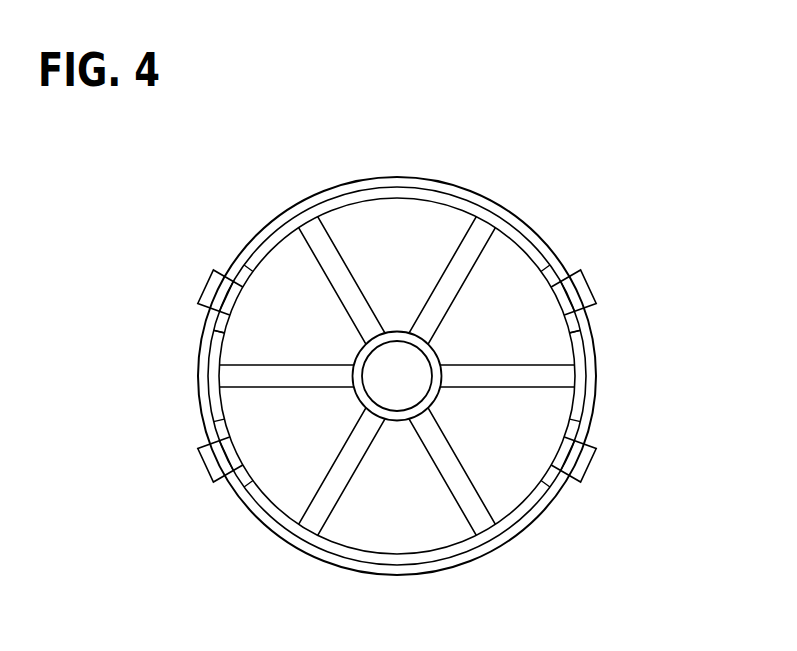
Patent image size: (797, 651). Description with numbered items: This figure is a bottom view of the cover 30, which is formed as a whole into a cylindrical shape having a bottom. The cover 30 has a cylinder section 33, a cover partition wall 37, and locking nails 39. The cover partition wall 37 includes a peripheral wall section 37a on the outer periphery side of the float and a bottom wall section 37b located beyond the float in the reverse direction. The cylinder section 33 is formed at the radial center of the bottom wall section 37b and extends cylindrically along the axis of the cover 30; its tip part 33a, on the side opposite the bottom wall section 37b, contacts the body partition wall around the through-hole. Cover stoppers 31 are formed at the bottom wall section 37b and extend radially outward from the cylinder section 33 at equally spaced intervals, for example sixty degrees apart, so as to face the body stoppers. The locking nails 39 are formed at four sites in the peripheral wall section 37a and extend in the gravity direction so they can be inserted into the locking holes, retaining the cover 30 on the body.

The cover 30 is at (498, 190).
The cover stoppers 31 is at (347, 488).
The cylinder section 33 is at (437, 398).
The tip part 33a is at (397, 413).
The cover partition wall 37 is at (471, 376).
The peripheral wall section 37a is at (584, 346).
The bottom wall section 37b is at (513, 348).
The locking nails 39 is at (581, 271).